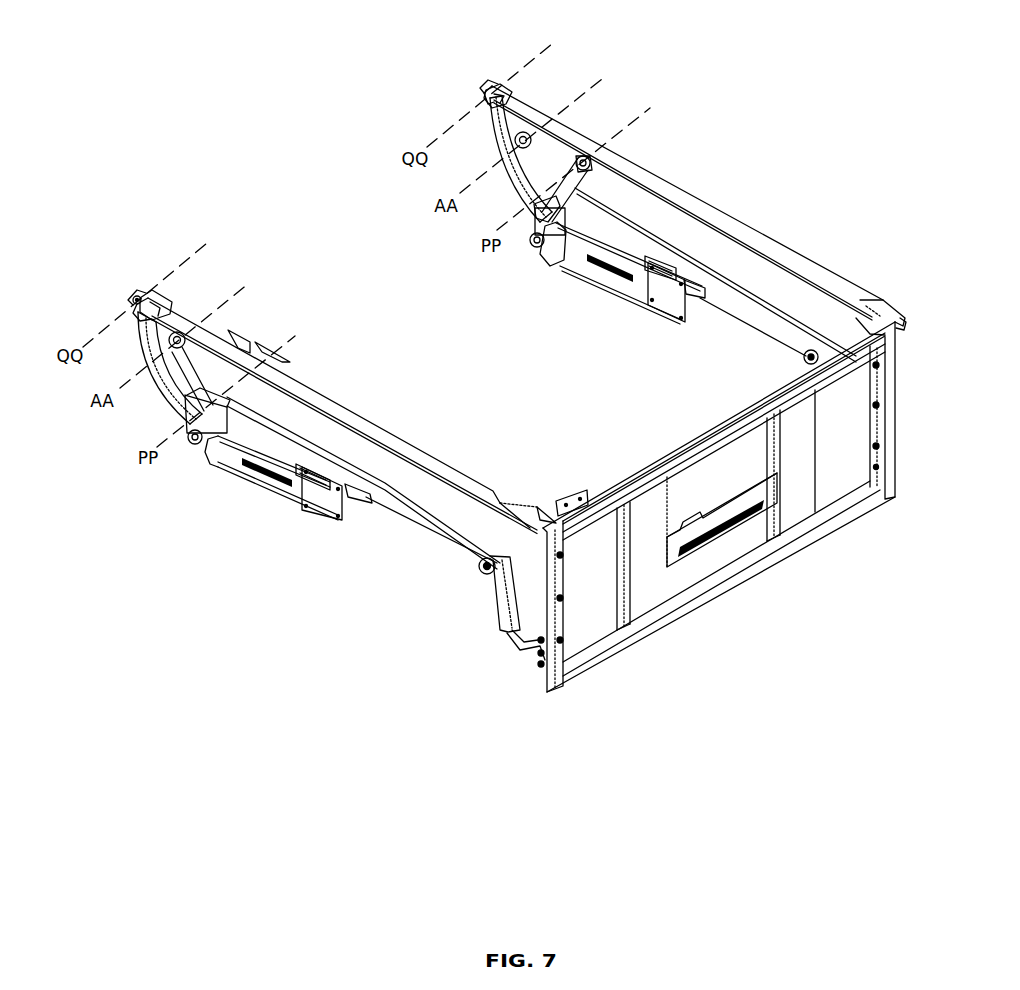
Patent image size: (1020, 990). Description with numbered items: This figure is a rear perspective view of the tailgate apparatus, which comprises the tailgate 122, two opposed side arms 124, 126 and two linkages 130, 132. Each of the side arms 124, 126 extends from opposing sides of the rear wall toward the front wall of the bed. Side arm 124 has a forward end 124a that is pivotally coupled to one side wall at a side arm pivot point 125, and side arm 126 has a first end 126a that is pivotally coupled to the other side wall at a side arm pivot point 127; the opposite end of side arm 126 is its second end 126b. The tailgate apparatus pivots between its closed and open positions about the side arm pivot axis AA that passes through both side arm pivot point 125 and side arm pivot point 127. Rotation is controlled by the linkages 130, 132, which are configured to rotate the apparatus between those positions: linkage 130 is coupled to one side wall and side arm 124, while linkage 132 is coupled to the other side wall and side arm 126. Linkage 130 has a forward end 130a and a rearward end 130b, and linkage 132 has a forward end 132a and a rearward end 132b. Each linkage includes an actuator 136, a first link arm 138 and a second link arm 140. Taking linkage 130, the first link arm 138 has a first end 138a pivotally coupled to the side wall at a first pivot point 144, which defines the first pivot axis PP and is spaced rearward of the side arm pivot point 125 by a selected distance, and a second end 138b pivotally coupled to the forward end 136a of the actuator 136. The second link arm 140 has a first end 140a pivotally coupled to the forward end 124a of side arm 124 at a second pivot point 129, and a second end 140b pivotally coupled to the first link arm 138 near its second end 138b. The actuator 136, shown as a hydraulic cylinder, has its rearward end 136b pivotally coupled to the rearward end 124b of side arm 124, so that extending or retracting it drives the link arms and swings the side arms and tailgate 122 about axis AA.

The tailgate 122 is at (640, 596).
The side arm 124 is at (345, 370).
The forward end of side arm 124a is at (152, 285).
The rearward end of side arm 124b is at (503, 495).
The side arm pivot point 125 is at (181, 335).
The side arm 126 is at (700, 185).
The first end of side arm 126a is at (490, 83).
The second end of side arm 126b is at (850, 290).
The side arm pivot point 127 is at (527, 134).
The second pivot point 129 is at (135, 295).
The linkage 130 is at (188, 408).
The forward end of linkage 130a is at (105, 424).
The rearward end of linkage 130b is at (490, 634).
The linkage 132 is at (473, 221).
The forward end of linkage 132a is at (524, 52).
The rearward end of linkage 132b is at (896, 292).
The actuator 136 is at (511, 407).
The forward end of actuator 136a is at (553, 250).
The rearward end of actuator 136b is at (805, 355).
The first link arm 138 is at (406, 292).
The first end of first link arm 138a is at (585, 158).
The second end of first link arm 138b is at (533, 236).
The second link arm 140 is at (172, 378).
The first end of second link arm 140a is at (497, 120).
The second end of second link arm 140b is at (533, 197).
The first pivot point 144 is at (247, 350).